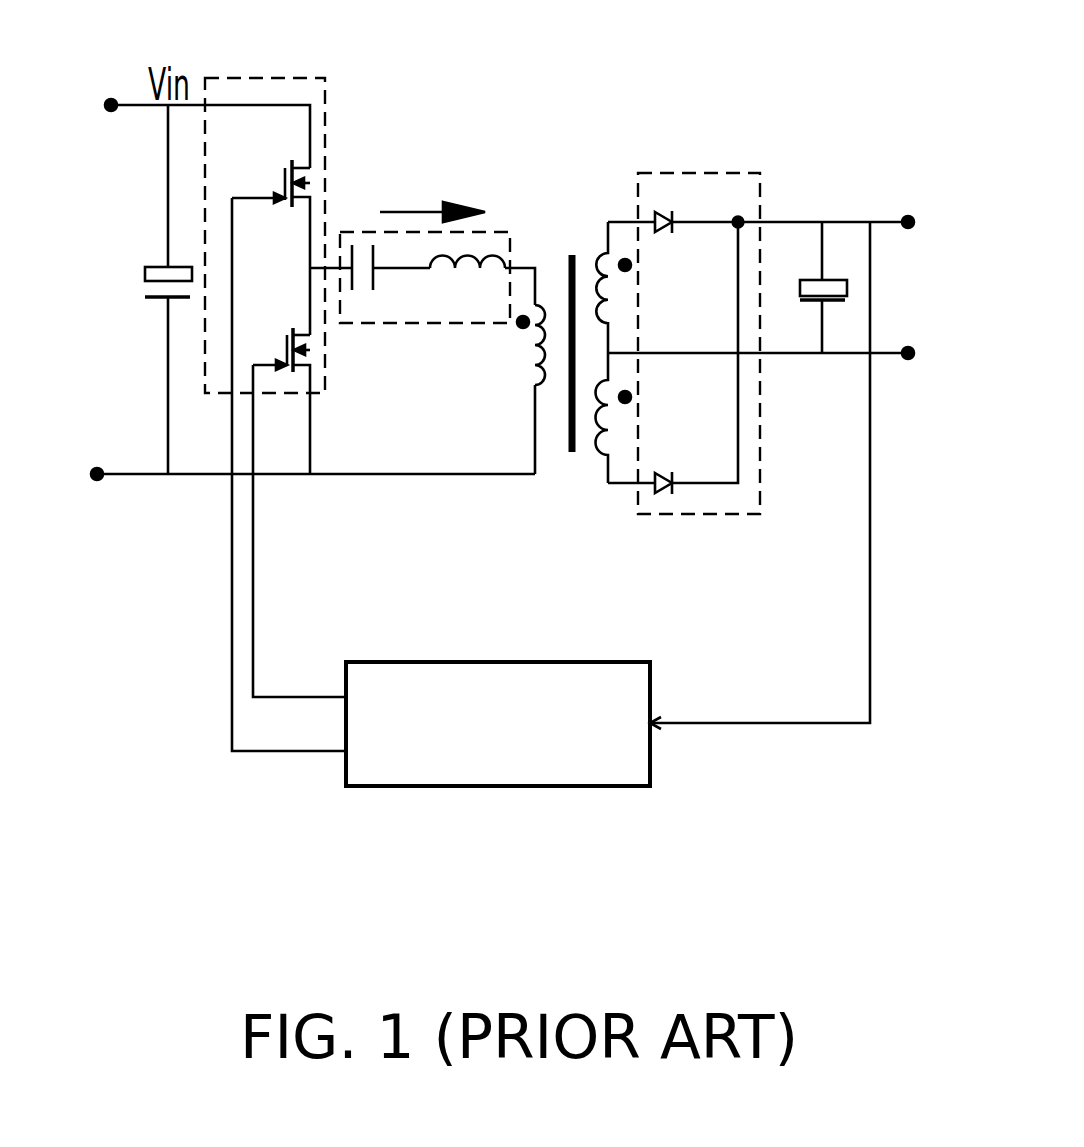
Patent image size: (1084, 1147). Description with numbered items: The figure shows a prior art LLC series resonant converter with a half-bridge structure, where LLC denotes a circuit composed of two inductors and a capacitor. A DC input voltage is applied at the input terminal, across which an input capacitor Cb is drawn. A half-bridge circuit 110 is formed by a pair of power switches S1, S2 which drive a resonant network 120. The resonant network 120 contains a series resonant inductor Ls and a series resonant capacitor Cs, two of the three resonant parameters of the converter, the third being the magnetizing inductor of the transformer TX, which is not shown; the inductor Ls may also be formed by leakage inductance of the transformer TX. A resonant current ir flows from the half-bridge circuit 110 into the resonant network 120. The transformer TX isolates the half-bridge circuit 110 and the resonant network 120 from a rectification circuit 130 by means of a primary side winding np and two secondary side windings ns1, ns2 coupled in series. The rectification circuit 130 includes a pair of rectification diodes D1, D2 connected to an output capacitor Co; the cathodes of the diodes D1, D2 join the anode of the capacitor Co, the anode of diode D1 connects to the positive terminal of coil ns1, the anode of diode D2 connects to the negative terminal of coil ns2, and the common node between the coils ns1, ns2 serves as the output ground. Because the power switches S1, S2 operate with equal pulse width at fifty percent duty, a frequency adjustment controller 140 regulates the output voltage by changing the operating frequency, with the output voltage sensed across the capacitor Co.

The half-bridge circuit 110 is at (263, 78).
The resonant network 120 is at (510, 236).
The rectification circuit 130 is at (700, 173).
The frequency adjustment controller 140 is at (650, 758).
The power switch S1 is at (313, 190).
The power switch S2 is at (313, 352).
The input bulk capacitor Cb is at (145, 273).
The series resonant capacitor Cs is at (378, 290).
The series resonant inductor Ls is at (468, 272).
The transformer TX is at (587, 349).
The primary side winding np is at (540, 375).
The secondary side winding ns1 is at (632, 268).
The secondary side winding ns2 is at (632, 400).
The rectification diode D1 is at (665, 233).
The rectification diode D2 is at (665, 494).
The output capacitor Co is at (848, 287).
The resonant current ir is at (418, 210).